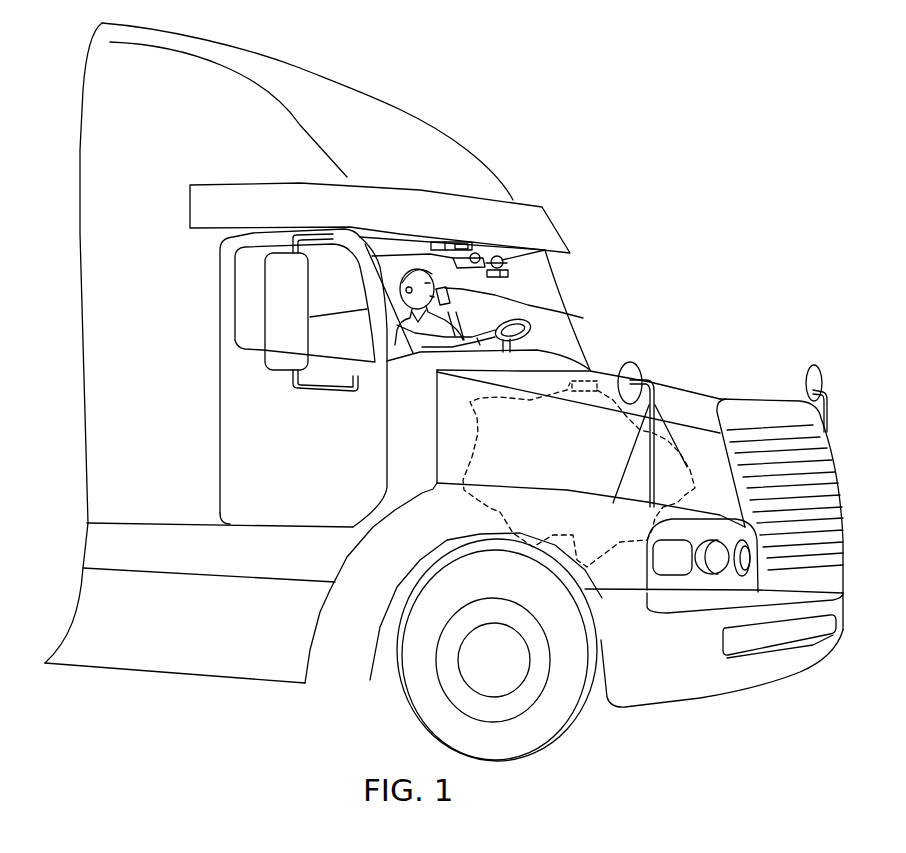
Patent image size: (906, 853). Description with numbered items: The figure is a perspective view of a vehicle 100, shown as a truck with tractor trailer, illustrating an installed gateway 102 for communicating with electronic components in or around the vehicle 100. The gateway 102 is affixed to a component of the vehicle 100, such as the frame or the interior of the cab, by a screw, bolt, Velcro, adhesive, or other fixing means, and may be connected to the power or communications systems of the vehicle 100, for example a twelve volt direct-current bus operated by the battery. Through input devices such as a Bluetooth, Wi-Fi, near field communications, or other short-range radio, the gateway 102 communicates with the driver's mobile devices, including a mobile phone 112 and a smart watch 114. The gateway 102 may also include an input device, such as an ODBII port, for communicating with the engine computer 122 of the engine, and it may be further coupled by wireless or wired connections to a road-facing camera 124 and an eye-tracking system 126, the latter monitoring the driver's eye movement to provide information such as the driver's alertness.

The vehicle 100 is at (348, 86).
The gateway 102 is at (462, 243).
The mobile phone 112 is at (578, 317).
The smart watch 114 is at (495, 332).
The engine computer 122 is at (590, 383).
The road-facing camera 124 is at (512, 270).
The eye-tracking system 126 is at (474, 257).